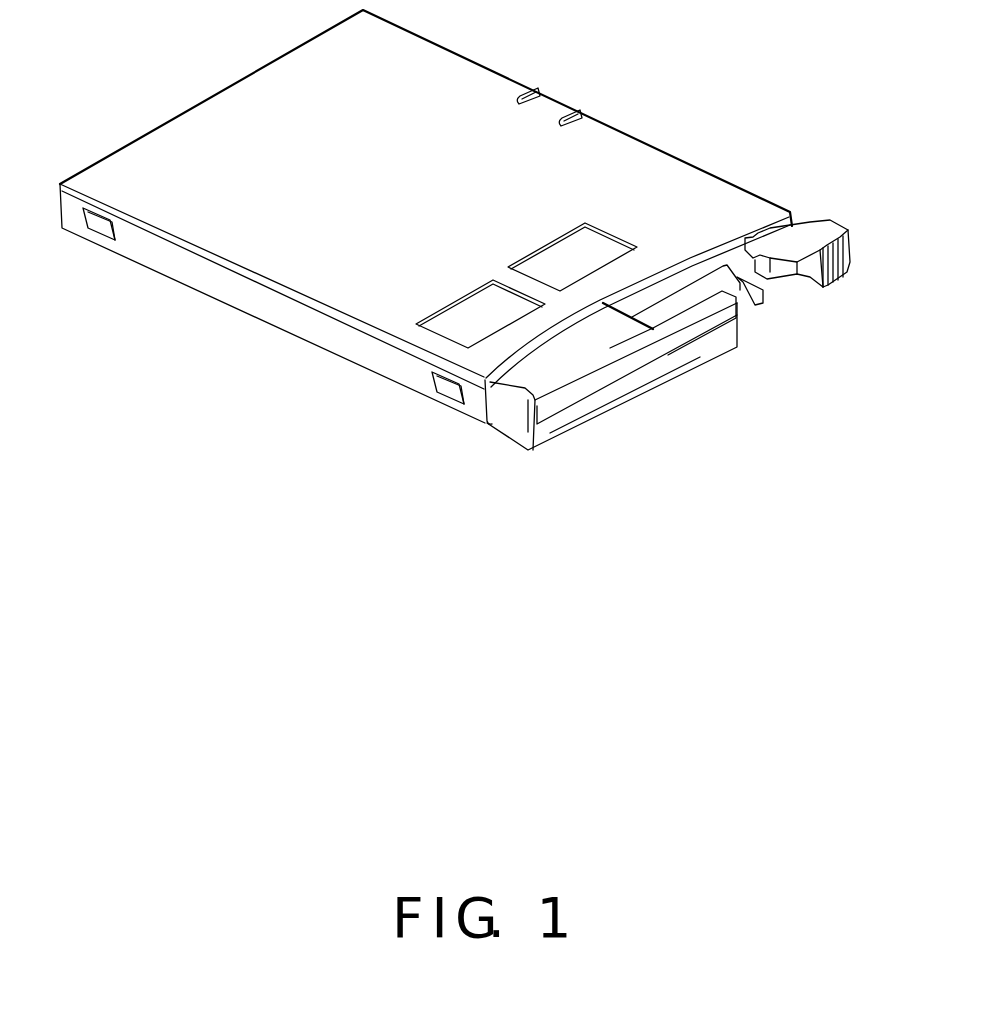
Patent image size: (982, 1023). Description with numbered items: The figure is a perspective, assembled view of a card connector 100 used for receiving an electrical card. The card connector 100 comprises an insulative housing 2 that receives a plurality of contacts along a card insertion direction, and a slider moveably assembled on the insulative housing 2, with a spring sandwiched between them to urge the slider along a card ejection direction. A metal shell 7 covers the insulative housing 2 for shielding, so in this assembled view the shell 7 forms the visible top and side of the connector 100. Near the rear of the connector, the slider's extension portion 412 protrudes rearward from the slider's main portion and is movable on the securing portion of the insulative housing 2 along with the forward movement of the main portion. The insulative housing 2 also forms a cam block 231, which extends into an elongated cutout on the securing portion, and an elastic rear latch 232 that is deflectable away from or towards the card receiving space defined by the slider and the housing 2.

The card connector 100 is at (589, 72).
The metal shell 7 is at (458, 97).
The insulative housing 2 is at (605, 392).
The extension portion 412 is at (660, 288).
The rear latch 232 is at (812, 233).
The cam block 231 is at (767, 290).